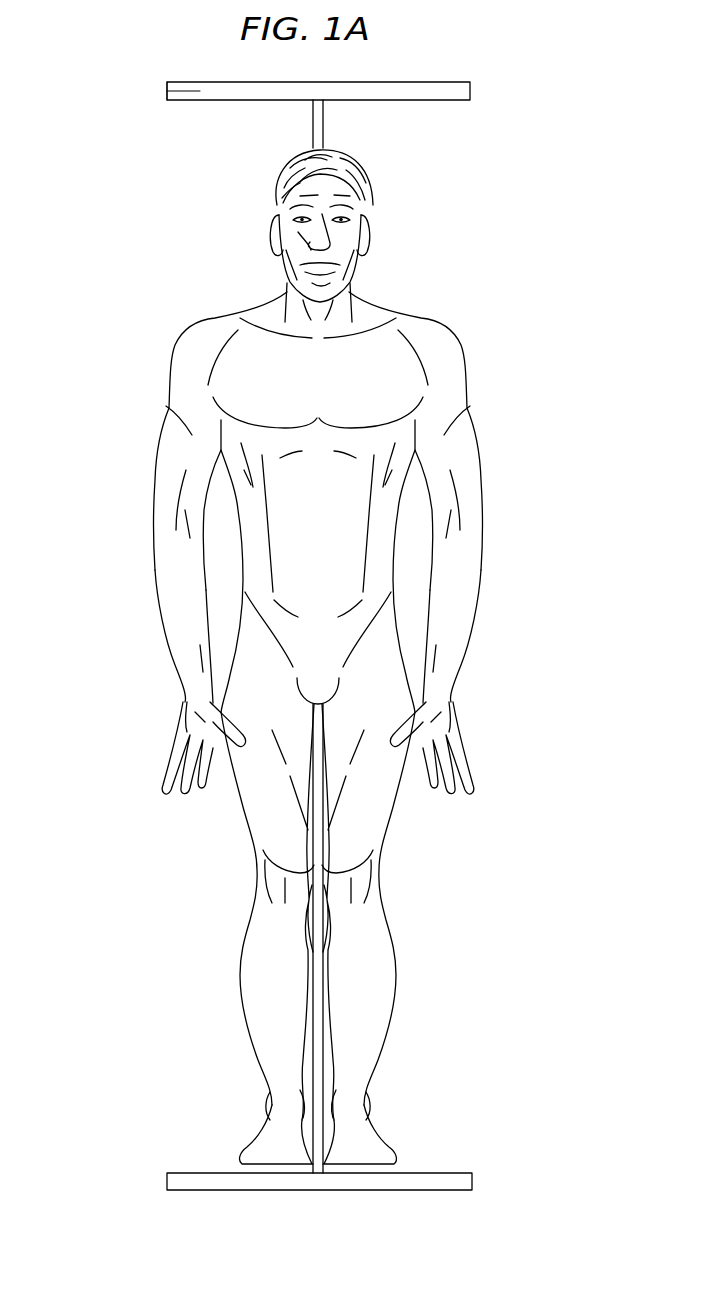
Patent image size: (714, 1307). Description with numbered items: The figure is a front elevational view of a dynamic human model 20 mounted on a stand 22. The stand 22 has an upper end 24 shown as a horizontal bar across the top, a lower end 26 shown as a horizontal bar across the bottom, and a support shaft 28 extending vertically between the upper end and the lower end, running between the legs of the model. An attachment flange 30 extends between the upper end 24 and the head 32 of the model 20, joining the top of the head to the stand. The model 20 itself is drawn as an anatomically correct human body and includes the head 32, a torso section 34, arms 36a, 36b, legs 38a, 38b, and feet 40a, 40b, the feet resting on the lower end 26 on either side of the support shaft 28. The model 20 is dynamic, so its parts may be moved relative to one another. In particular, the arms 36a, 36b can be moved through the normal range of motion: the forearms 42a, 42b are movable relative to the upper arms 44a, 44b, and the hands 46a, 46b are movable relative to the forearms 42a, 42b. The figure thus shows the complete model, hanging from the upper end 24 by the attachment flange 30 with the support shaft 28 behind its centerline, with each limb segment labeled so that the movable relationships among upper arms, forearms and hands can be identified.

The dynamic human model 20 is at (62, 282).
The stand 22 is at (473, 91).
The upper end 24 is at (172, 92).
The lower end 26 is at (172, 1182).
The support shaft 28 is at (320, 1068).
The attachment flange 30 is at (313, 136).
The head 32 is at (276, 205).
The torso section 34 is at (330, 560).
The arm 36a is at (178, 410).
The arm 36b is at (472, 452).
The leg 38a is at (254, 810).
The leg 38b is at (392, 814).
The foot 40a is at (260, 1152).
The foot 40b is at (392, 1143).
The forearm 42a is at (164, 569).
The forearm 42b is at (480, 570).
The upper arm 44a is at (178, 447).
The upper arm 44b is at (474, 422).
The hand 46a is at (195, 731).
The hand 46b is at (441, 730).